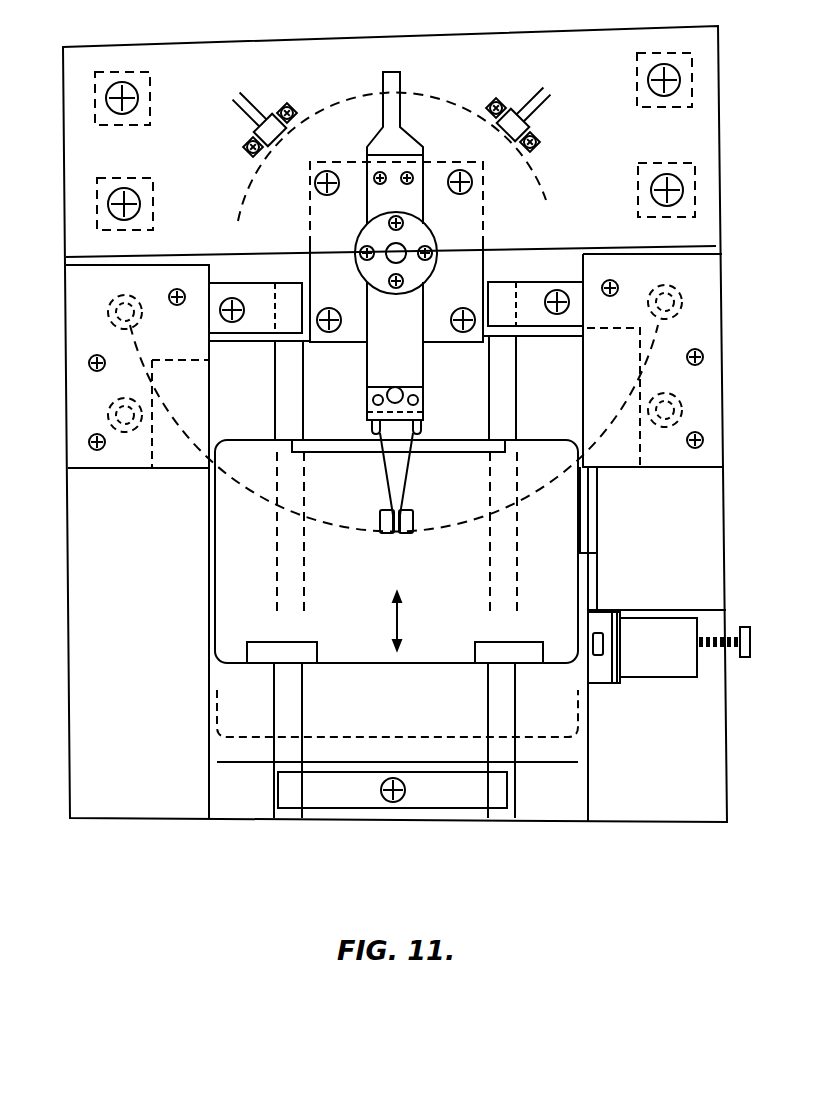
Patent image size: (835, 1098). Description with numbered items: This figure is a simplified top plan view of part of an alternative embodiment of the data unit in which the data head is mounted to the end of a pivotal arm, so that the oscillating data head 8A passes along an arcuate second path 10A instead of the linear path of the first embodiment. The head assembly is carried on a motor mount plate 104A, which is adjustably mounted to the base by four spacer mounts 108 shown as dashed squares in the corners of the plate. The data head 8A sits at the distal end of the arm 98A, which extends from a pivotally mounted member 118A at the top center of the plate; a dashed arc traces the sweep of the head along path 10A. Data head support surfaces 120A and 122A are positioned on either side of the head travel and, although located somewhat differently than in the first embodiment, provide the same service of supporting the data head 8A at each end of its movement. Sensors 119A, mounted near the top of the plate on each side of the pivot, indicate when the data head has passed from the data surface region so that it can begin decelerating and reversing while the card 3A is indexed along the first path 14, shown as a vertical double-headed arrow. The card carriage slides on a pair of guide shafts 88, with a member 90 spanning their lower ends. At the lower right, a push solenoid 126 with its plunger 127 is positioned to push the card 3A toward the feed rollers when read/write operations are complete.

The motor mount plate 104A is at (721, 96).
The spacer mounts 108 is at (95, 94).
The sensors 119A is at (268, 108).
The tool arm 118A is at (409, 70).
The arm 98A is at (404, 467).
The oscillating data head 8A is at (399, 535).
The data head support surface 120A is at (178, 453).
The data head support surface 122A is at (612, 447).
The card 3A is at (208, 584).
The arcuate second path 10A is at (243, 484).
The guide shafts 88 is at (301, 718).
The cross bar 90 is at (343, 802).
The first path 14 is at (400, 628).
The push solenoid 126 is at (657, 667).
The plunger 127 is at (594, 670).